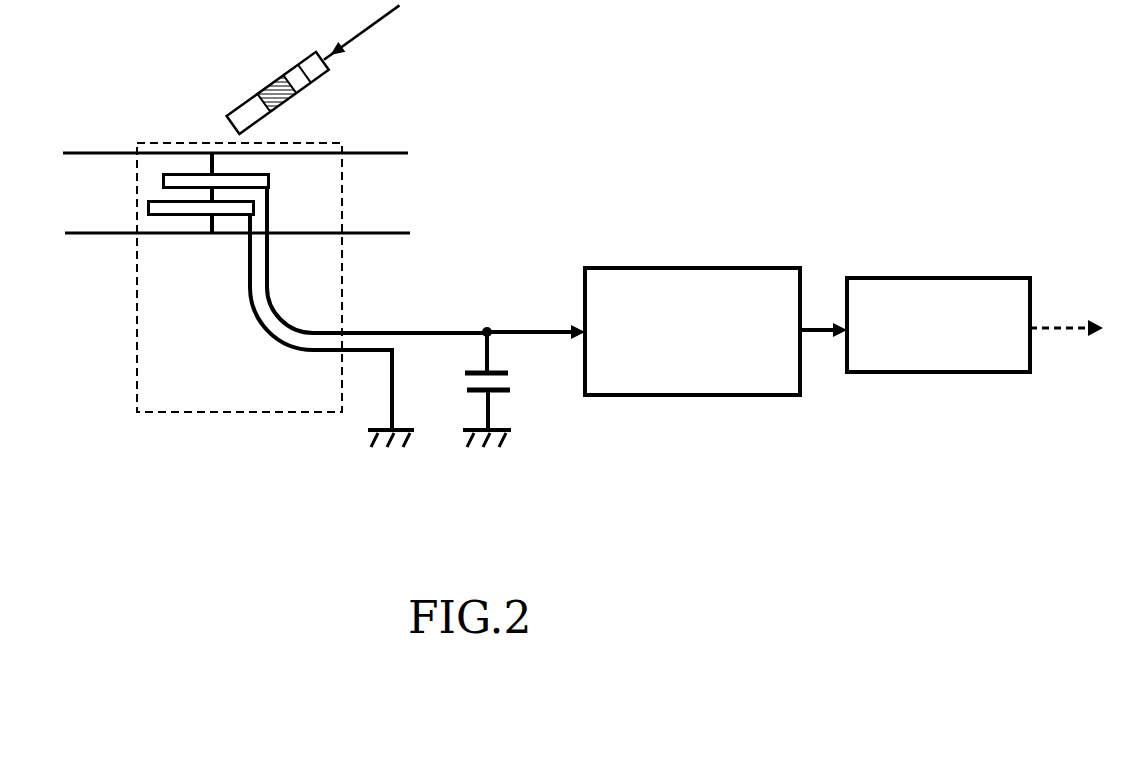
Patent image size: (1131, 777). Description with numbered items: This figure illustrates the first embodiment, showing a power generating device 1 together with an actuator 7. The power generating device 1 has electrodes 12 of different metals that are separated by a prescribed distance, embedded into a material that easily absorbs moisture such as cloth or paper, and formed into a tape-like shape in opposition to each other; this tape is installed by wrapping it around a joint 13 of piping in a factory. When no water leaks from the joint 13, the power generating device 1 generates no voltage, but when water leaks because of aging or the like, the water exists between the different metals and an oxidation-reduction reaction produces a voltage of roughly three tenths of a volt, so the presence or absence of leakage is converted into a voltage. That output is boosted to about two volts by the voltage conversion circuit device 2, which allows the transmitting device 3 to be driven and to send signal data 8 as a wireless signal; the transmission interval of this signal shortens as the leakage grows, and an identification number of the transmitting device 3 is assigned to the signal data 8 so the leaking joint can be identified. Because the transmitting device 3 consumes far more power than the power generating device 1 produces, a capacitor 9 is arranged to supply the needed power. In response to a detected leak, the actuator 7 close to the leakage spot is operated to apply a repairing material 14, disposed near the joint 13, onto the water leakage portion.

The power generating device 1 is at (343, 318).
The voltage conversion circuit device 2 is at (673, 268).
The transmitting device 3 is at (928, 278).
The actuator 7 is at (393, 18).
The signal data 8 is at (1053, 327).
The capacitor 9 is at (512, 378).
The electrodes 12 is at (157, 198).
The joint of piping 13 is at (207, 219).
The repairing material 14 is at (298, 98).